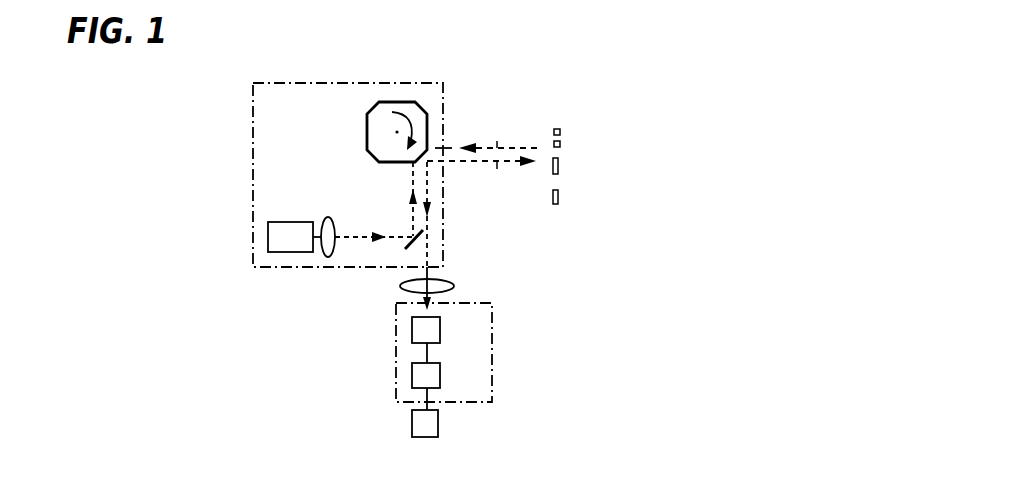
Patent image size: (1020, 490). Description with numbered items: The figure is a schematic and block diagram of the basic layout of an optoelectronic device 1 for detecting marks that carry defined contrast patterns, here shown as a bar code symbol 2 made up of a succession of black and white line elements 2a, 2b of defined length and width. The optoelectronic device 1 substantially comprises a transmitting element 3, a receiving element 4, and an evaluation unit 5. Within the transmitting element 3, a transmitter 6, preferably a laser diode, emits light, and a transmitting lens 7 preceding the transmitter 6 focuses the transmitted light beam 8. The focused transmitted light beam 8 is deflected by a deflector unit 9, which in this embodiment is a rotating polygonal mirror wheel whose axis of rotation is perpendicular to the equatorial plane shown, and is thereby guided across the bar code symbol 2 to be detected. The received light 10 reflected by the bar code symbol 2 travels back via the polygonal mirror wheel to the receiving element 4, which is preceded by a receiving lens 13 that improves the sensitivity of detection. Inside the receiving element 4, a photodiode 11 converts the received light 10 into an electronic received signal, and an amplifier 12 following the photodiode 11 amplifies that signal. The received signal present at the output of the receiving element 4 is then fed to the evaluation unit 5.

The optoelectronic device 1 is at (278, 84).
The bar code symbol 2 is at (554, 114).
The line element 2a is at (560, 132).
The line element 2b is at (554, 131).
The transmitting element 3 is at (253, 97).
The receiving element 4 is at (498, 341).
The evaluation unit 5 is at (438, 431).
The transmitter 6 is at (268, 237).
The transmitting lens 7 is at (335, 220).
The transmitted light beam 8 is at (497, 178).
The deflector unit 9 is at (371, 109).
The received light 10 is at (497, 130).
The photodiode 11 is at (412, 332).
The amplifier 12 is at (412, 375).
The receiving lens 13 is at (453, 287).